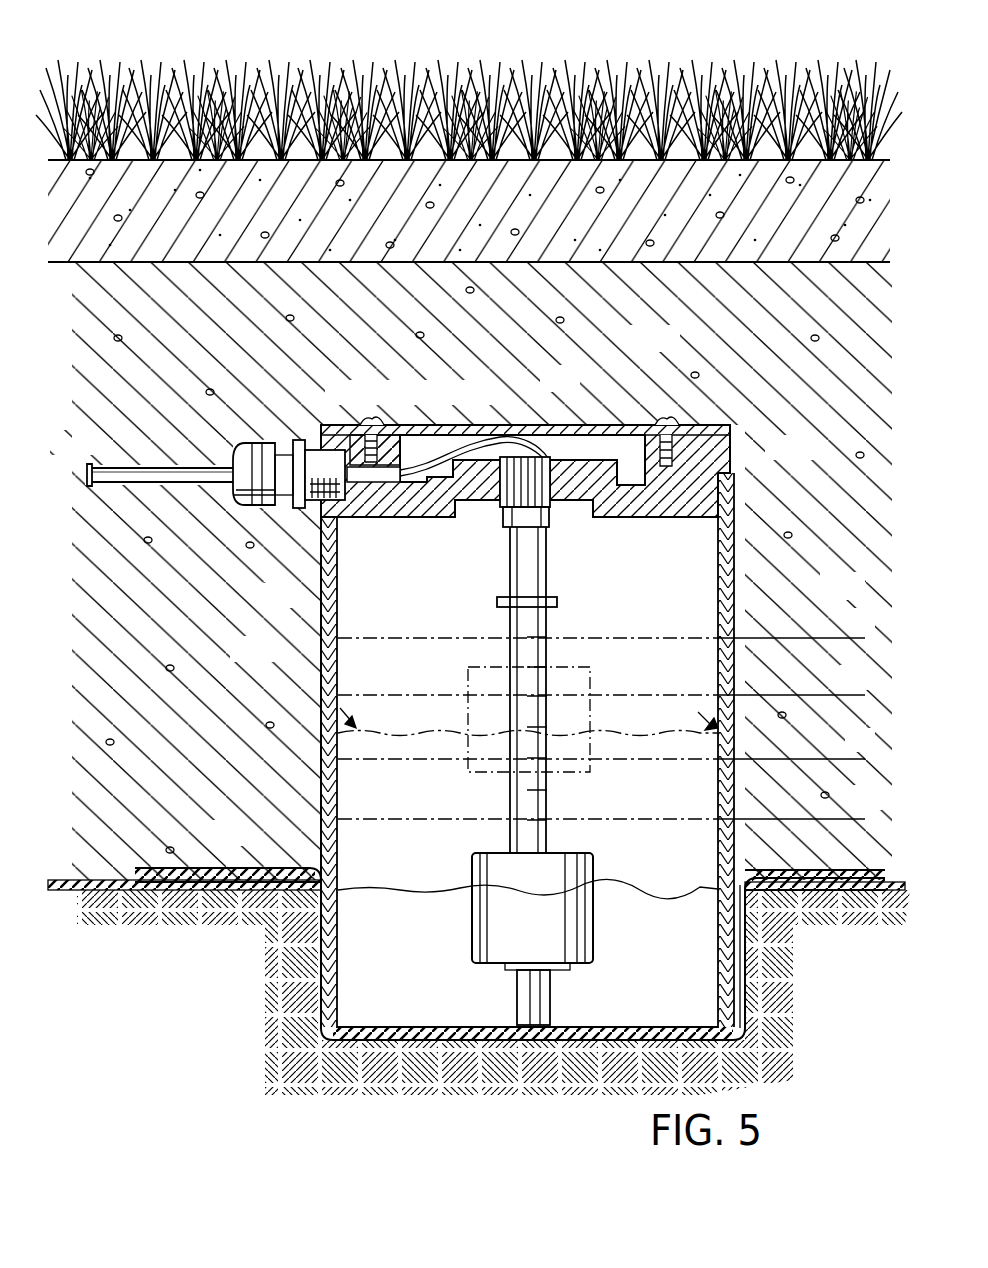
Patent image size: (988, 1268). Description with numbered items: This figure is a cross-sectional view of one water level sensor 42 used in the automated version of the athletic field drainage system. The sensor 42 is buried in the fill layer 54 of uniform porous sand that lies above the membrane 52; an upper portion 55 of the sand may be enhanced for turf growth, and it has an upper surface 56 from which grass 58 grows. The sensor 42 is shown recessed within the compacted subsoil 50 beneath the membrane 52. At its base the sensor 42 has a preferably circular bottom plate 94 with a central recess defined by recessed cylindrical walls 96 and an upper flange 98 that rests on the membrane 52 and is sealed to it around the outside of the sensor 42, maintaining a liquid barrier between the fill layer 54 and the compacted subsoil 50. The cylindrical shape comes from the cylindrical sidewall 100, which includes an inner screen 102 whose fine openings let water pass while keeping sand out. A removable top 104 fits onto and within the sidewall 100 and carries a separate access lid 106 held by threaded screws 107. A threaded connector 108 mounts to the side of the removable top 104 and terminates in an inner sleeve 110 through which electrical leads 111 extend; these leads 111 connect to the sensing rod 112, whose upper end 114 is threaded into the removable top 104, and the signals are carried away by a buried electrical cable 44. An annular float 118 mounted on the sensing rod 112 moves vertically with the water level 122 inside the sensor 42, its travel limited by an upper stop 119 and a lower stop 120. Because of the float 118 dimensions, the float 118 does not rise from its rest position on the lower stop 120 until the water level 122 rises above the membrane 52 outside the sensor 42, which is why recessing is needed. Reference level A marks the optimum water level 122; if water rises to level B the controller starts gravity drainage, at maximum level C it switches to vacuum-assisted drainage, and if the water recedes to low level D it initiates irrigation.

The sensor 42 is at (606, 400).
The electrical cable 44 is at (102, 462).
The compacted subsoil 50 is at (160, 984).
The membrane 52 is at (84, 893).
The fill layer 54 is at (800, 596).
The upper portion 55 is at (70, 238).
The upper surface 56 is at (66, 159).
The grass 58 is at (412, 60).
The bottom plate 94 is at (310, 926).
The recessed cylindrical walls 96 is at (266, 978).
The upper flange 98 is at (218, 868).
The cylindrical sidewall 100 is at (320, 652).
The inner screen 102 is at (338, 683).
The removable top 104 is at (722, 443).
The access lid 106 is at (550, 425).
The threaded screws 107 is at (322, 599).
The threaded connector 108 is at (312, 440).
The inner sleeve 110 is at (405, 426).
The electrical leads 111 is at (466, 445).
The sensing rod 112 is at (547, 565).
The upper end 114 is at (485, 505).
The float 118 is at (468, 667).
The upper stop 119 is at (497, 600).
The lower stop 120 is at (572, 975).
The water level 122 is at (628, 726).
The reference level A is at (832, 756).
The reference level B is at (828, 692).
The reference level C is at (832, 634).
The reference level D is at (840, 816).